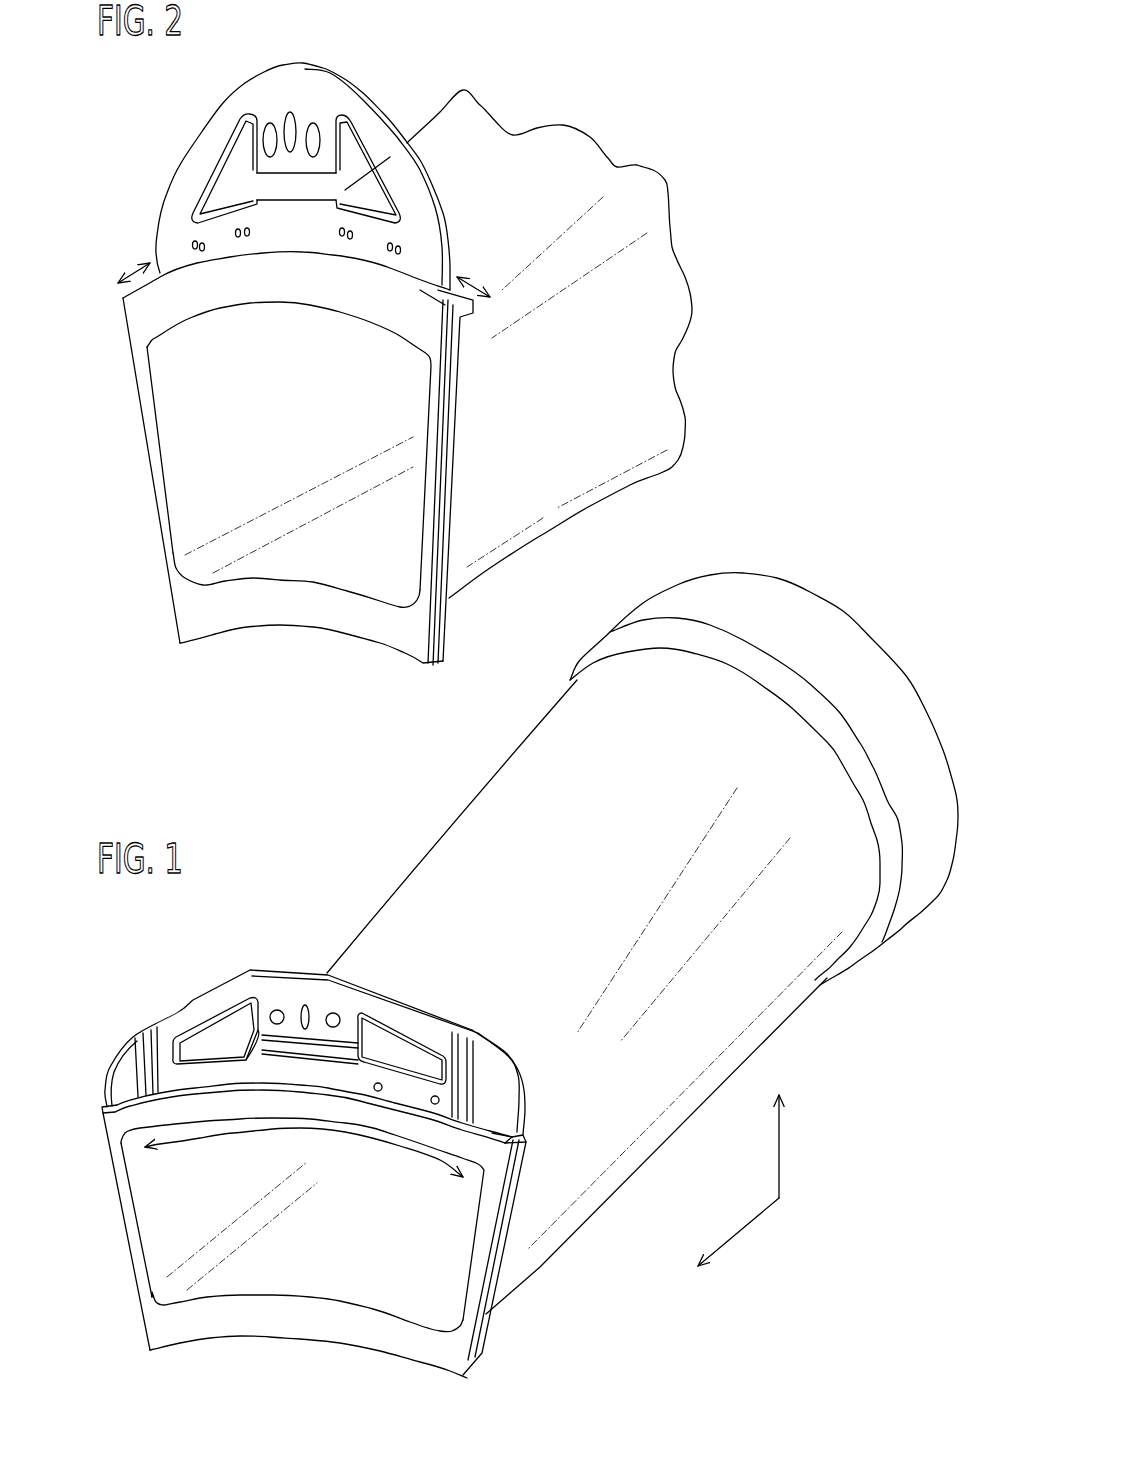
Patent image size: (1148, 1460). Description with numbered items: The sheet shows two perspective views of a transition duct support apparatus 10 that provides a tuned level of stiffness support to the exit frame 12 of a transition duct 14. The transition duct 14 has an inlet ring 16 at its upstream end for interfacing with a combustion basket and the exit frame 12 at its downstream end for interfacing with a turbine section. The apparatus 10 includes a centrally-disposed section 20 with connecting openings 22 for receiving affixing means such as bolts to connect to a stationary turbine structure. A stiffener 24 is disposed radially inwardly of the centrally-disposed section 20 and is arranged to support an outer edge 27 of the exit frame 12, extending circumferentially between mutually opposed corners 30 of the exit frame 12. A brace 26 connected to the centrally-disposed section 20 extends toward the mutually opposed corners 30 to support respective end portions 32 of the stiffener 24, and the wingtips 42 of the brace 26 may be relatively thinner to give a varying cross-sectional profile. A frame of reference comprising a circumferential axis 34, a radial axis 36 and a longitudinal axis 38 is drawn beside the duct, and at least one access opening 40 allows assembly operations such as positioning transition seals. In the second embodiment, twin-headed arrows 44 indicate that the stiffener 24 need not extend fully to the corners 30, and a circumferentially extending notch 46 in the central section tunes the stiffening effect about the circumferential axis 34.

In FIG. 2, the transition duct support apparatus 10 is at (168, 123).
In FIG. 1, the transition duct support apparatus 10 is at (126, 1008).
In FIG. 2, the exit frame 12 is at (152, 475).
In FIG. 1, the exit frame 12 is at (127, 1227).
In FIG. 2, the transition duct 14 is at (582, 391).
In FIG. 1, the transition duct 14 is at (582, 844).
In FIG. 1, the inlet ring 16 is at (800, 623).
In FIG. 2, the centrally-disposed section 20 is at (290, 93).
In FIG. 1, the centrally-disposed section 20 is at (305, 990).
In FIG. 1, the connecting openings 22 is at (278, 1012).
In FIG. 2, the stiffener 24 is at (290, 230).
In FIG. 1, the stiffener 24 is at (238, 1075).
In FIG. 2, the brace 26 is at (170, 167).
In FIG. 1, the brace 26 is at (193, 1015).
In FIG. 2, the outer edge 27 is at (370, 272).
In FIG. 1, the outer edge 27 is at (407, 1113).
In FIG. 1, the mutually opposed corners 30 is at (110, 1113).
In FIG. 1, the end portions 32 is at (122, 1098).
In FIG. 1, the circumferential axis 34 is at (342, 1147).
In FIG. 1, the radial axis 36 is at (781, 1143).
In FIG. 1, the longitudinal axis 38 is at (741, 1231).
In FIG. 1, the access opening 40 is at (232, 1027).
In FIG. 1, the wingtips 42 is at (122, 1068).
In FIG. 2, the twin-headed arrows 44 is at (133, 260).
In FIG. 2, the circumferentially extending notch 46 is at (275, 187).